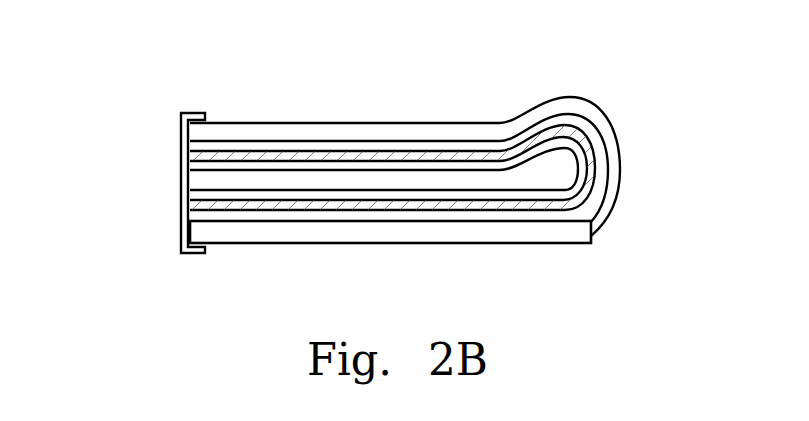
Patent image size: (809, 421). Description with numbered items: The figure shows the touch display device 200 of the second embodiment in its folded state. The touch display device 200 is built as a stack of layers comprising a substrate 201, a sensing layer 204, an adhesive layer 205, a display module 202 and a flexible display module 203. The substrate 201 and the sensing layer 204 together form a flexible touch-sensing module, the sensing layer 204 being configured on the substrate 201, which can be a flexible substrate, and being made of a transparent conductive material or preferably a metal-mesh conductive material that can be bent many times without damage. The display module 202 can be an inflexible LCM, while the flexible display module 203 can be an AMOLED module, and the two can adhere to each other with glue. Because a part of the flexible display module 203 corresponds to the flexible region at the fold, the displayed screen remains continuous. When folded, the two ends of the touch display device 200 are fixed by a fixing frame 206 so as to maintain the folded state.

The touch display device 200 is at (433, 186).
The substrate 201 is at (558, 150).
The display module 202 is at (555, 232).
The flexible display module 203 is at (605, 212).
The sensing layer 204 is at (578, 134).
The adhesive layer 205 is at (603, 176).
The fixing frame 206 is at (201, 114).